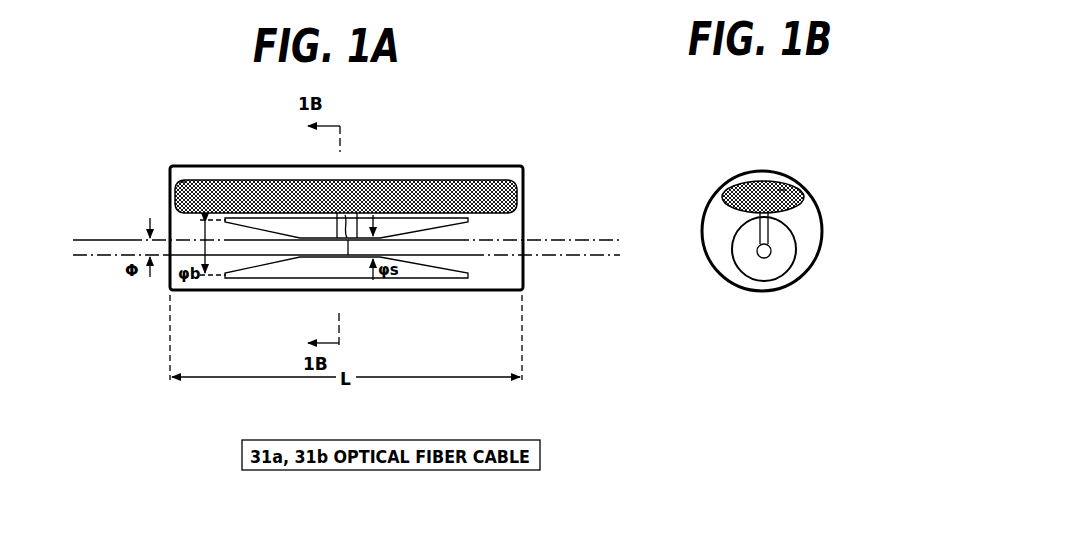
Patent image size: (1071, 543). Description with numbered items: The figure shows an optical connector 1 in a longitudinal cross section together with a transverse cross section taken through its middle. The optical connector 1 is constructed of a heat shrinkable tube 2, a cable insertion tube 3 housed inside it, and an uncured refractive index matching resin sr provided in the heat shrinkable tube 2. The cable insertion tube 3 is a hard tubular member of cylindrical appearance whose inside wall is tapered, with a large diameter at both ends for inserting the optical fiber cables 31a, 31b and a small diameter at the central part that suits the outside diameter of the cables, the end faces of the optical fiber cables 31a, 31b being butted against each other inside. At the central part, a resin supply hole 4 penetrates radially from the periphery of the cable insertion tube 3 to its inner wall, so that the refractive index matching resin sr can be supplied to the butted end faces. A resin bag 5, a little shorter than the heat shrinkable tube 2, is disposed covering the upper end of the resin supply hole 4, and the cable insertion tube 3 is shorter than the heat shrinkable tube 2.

In FIG. 1A, the optical connector 1 is at (230, 112).
In FIG. 1B, the optical connector 1 is at (708, 121).
In FIG. 1A, the heat shrinkable tube 2 is at (519, 166).
In FIG. 1B, the heat shrinkable tube 2 is at (740, 178).
In FIG. 1A, the cable insertion tube 3 is at (445, 291).
In FIG. 1B, the cable insertion tube 3 is at (740, 280).
In FIG. 1A, the resin supply hole 4 is at (340, 212).
In FIG. 1B, the resin supply hole 4 is at (758, 230).
In FIG. 1A, the resin bag 5 is at (405, 178).
In FIG. 1B, the resin bag 5 is at (769, 178).
In FIG. 1A, the optical fiber cable 31a is at (128, 240).
In FIG. 1A, the optical fiber cable 31b is at (548, 240).
In FIG. 1A, the refractive index matching resin sr is at (174, 184).
In FIG. 1B, the refractive index matching resin sr is at (782, 188).